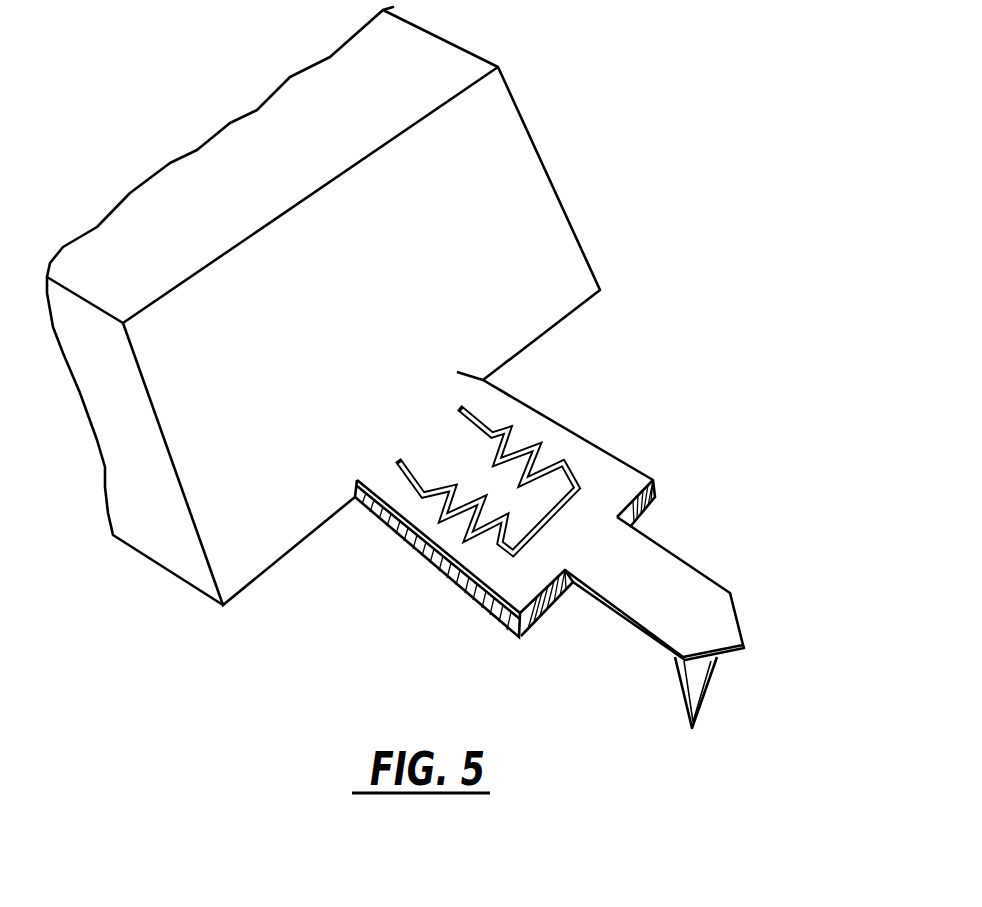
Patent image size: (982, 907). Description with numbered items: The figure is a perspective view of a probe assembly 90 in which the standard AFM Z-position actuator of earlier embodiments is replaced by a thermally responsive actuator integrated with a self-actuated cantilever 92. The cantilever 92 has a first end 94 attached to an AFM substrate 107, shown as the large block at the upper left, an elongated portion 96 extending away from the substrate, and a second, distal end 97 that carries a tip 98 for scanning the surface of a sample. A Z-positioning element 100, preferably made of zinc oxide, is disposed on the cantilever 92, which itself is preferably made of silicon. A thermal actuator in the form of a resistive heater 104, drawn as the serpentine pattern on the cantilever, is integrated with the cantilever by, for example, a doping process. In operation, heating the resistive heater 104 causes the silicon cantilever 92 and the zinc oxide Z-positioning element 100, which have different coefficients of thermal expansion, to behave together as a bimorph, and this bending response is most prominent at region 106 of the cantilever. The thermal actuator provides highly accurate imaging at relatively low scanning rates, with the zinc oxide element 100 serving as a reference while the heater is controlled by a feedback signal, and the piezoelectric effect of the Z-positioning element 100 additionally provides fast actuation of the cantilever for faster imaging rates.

The probe assembly 90 is at (713, 245).
The self-actuated cantilever 92 is at (725, 437).
The first end 94 is at (355, 512).
The elongated portion 96 is at (492, 622).
The second, distal end 97 is at (745, 602).
The tip 98 is at (712, 693).
The Z-positioning element 100 is at (533, 628).
The resistive heater 104 is at (536, 436).
The region 106 is at (600, 473).
The AFM substrate 107 is at (553, 147).